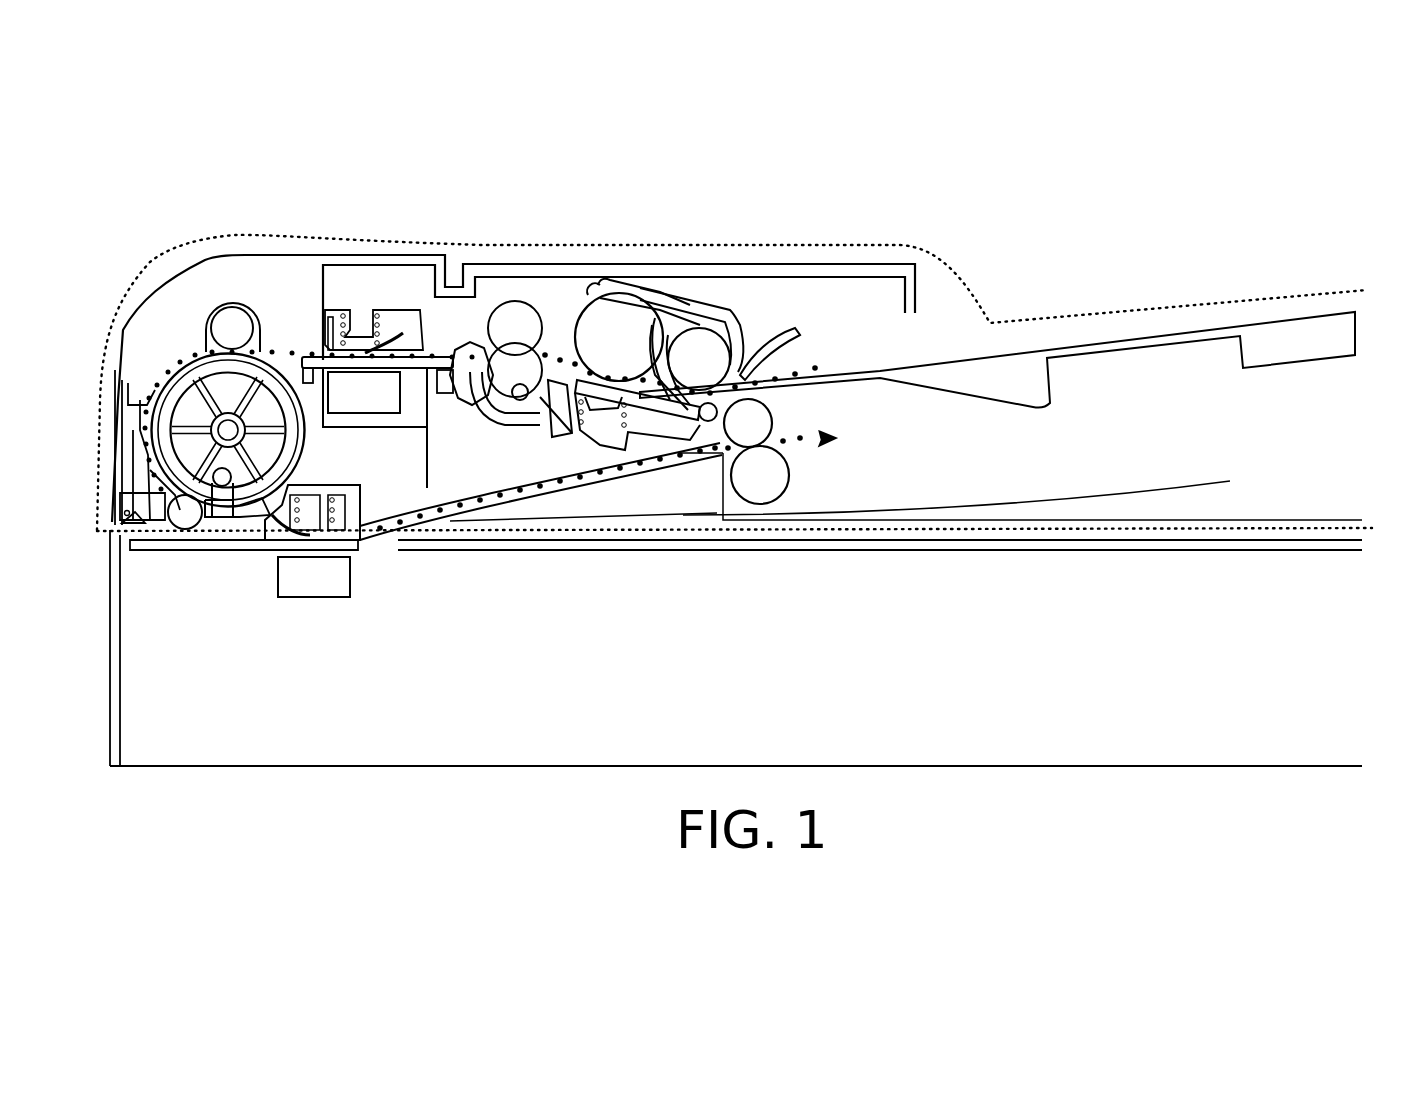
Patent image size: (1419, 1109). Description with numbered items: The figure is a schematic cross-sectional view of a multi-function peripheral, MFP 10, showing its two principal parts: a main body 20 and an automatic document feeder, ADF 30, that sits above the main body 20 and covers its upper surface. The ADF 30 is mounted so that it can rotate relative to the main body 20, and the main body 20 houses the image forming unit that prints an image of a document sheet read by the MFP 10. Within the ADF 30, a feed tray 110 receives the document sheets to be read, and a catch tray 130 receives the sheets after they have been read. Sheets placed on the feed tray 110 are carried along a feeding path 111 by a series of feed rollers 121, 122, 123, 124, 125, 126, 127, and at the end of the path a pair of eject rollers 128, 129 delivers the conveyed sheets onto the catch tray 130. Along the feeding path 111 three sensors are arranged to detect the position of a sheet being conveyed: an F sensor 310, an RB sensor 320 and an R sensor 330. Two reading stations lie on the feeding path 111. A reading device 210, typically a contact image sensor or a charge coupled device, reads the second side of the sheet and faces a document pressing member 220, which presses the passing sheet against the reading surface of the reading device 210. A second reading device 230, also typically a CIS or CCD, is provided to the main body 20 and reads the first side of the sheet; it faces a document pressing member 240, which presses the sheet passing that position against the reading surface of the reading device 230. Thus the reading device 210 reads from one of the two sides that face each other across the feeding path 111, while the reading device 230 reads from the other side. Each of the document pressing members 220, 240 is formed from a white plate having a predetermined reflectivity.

The MFP 10 is at (195, 166).
The main body 20 is at (365, 740).
The automatic document feeder (ADF) 30 is at (805, 246).
The feed tray 110 is at (948, 363).
The feeding path 111 is at (800, 366).
The feed roller 121 is at (706, 345).
The feed roller 122 is at (617, 318).
The feed roller 123 is at (498, 323).
The feed roller 124 is at (525, 368).
The feed roller 125 is at (216, 330).
The feed roller 126 is at (157, 395).
The feed roller 127 is at (182, 510).
The eject roller 128 is at (752, 402).
The eject roller 129 is at (773, 480).
The catch tray 130 is at (1158, 500).
The reading device 210 is at (307, 355).
The document pressing member 220 is at (368, 312).
The reading device 230 is at (325, 577).
The document pressing member 240 is at (360, 528).
The F sensor 310 is at (658, 363).
The RB sensor 320 is at (460, 340).
The R sensor 330 is at (219, 503).